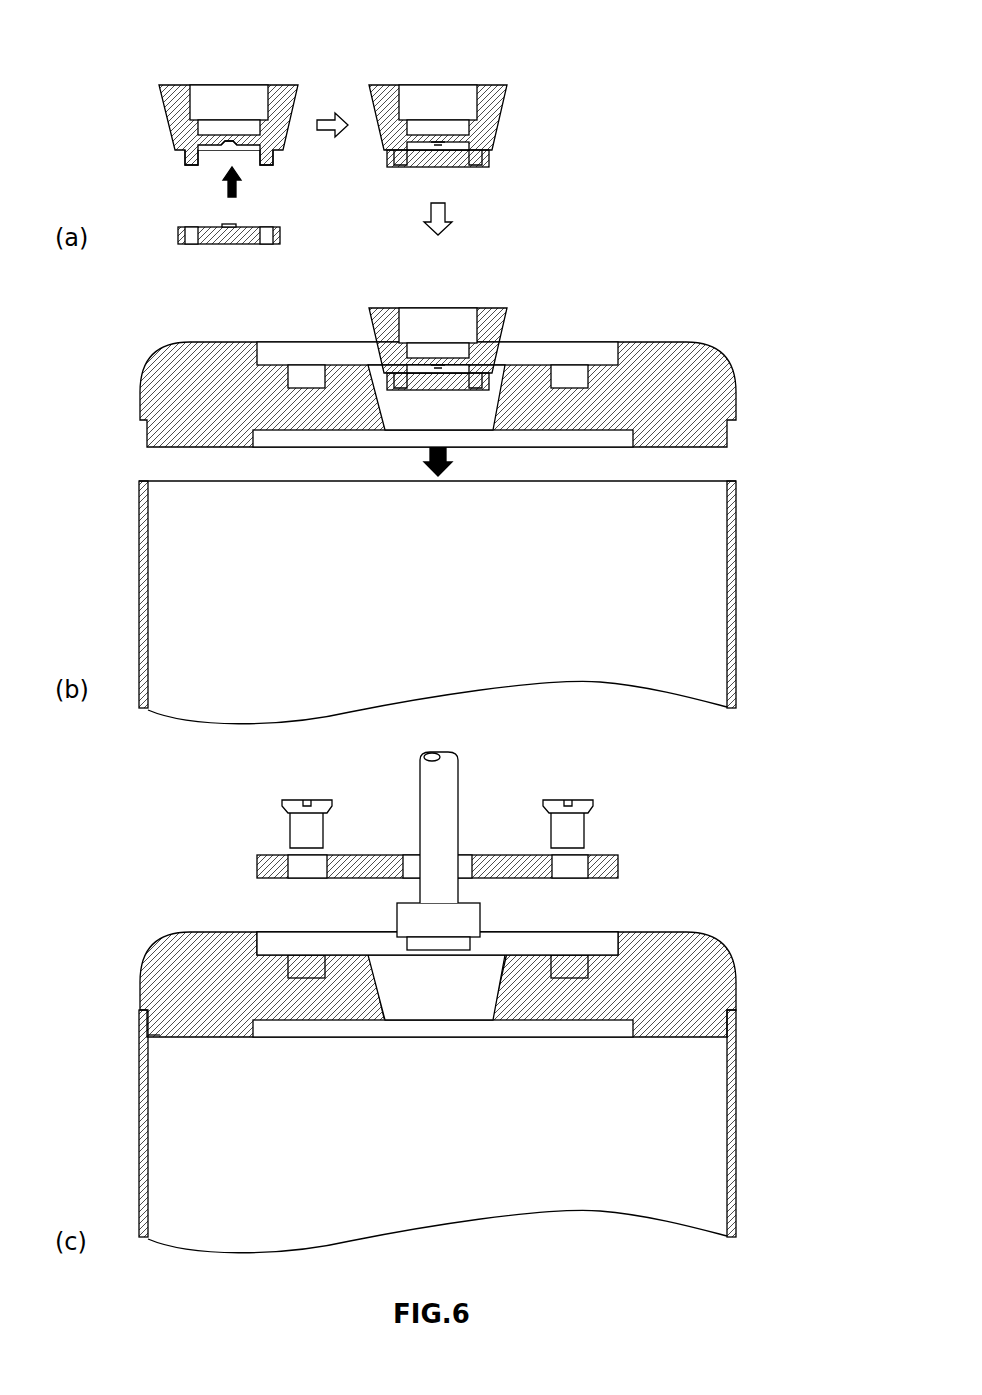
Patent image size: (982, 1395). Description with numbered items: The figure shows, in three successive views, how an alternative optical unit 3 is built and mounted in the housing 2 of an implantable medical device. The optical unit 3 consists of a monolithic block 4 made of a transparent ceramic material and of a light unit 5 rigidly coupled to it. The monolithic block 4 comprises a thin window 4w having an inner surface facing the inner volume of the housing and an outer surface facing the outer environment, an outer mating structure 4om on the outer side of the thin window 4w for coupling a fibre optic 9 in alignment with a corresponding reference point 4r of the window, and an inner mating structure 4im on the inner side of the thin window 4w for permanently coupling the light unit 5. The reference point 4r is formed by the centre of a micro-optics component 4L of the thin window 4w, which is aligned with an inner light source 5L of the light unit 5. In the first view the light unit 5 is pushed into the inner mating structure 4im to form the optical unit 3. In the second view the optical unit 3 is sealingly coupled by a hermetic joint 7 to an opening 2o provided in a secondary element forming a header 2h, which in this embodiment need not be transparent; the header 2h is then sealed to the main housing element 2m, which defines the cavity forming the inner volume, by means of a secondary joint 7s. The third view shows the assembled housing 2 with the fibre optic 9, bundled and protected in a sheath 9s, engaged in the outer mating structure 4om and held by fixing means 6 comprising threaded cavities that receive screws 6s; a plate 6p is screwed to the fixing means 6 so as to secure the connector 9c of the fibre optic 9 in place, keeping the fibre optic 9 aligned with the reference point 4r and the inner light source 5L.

The housing 2 is at (762, 958).
The header 2h is at (688, 343).
The main housing element 2m is at (736, 524).
The opening 2o is at (477, 415).
The optical unit 3 is at (510, 135).
The monolithic block 4 is at (281, 92).
The thin window 4w is at (217, 132).
The outer mating structure 4om is at (228, 100).
The inner mating structure 4im is at (185, 156).
The reference point 4r is at (229, 146).
The micro-optics component 4L is at (229, 145).
The light unit 5 is at (217, 243).
The inner light source 5L is at (229, 224).
The fixing means 6 is at (310, 378).
The screws 6s is at (333, 818).
The plate 6p is at (620, 870).
The hermetic joint 7 is at (532, 955).
The secondary joint 7s is at (165, 1037).
The fibre optic 9 is at (458, 773).
The sheath 9s is at (459, 773).
The connector 9c is at (483, 928).